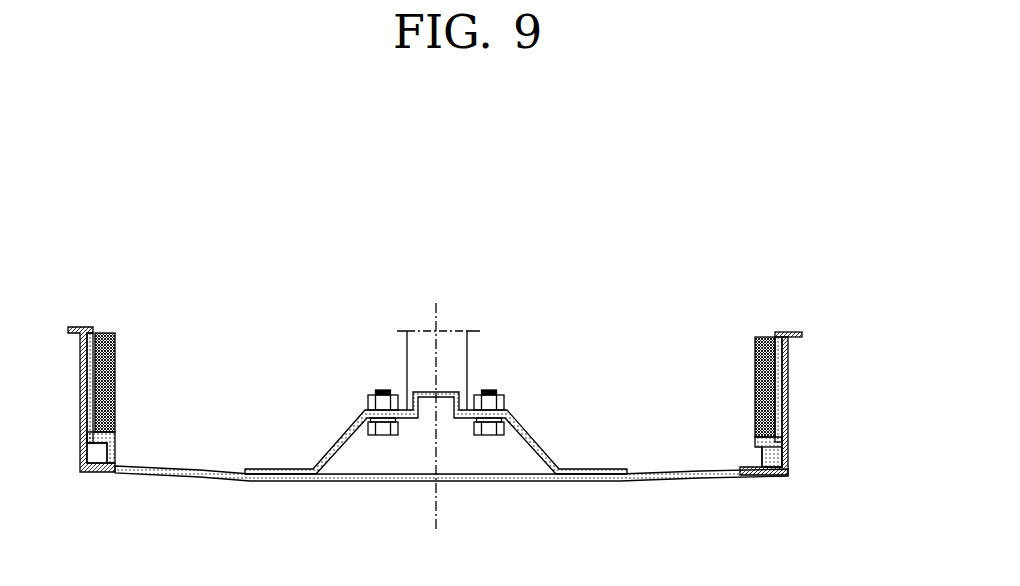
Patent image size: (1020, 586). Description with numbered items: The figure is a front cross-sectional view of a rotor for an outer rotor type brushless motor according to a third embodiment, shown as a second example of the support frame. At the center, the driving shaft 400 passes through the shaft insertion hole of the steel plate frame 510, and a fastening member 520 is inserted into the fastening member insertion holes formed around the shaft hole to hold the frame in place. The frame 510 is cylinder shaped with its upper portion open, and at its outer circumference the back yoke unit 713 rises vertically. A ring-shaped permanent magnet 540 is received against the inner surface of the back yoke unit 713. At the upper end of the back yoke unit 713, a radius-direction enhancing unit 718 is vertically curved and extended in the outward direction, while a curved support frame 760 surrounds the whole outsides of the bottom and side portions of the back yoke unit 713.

The driving shaft 400 is at (412, 358).
The steel plate frame 510 is at (692, 482).
The fastening member 520 is at (485, 437).
The ring-shaped permanent magnet 540 is at (755, 362).
The back yoke unit 713 is at (777, 387).
The radius-direction enhancing unit 718 is at (790, 333).
The support frame 760 is at (783, 443).